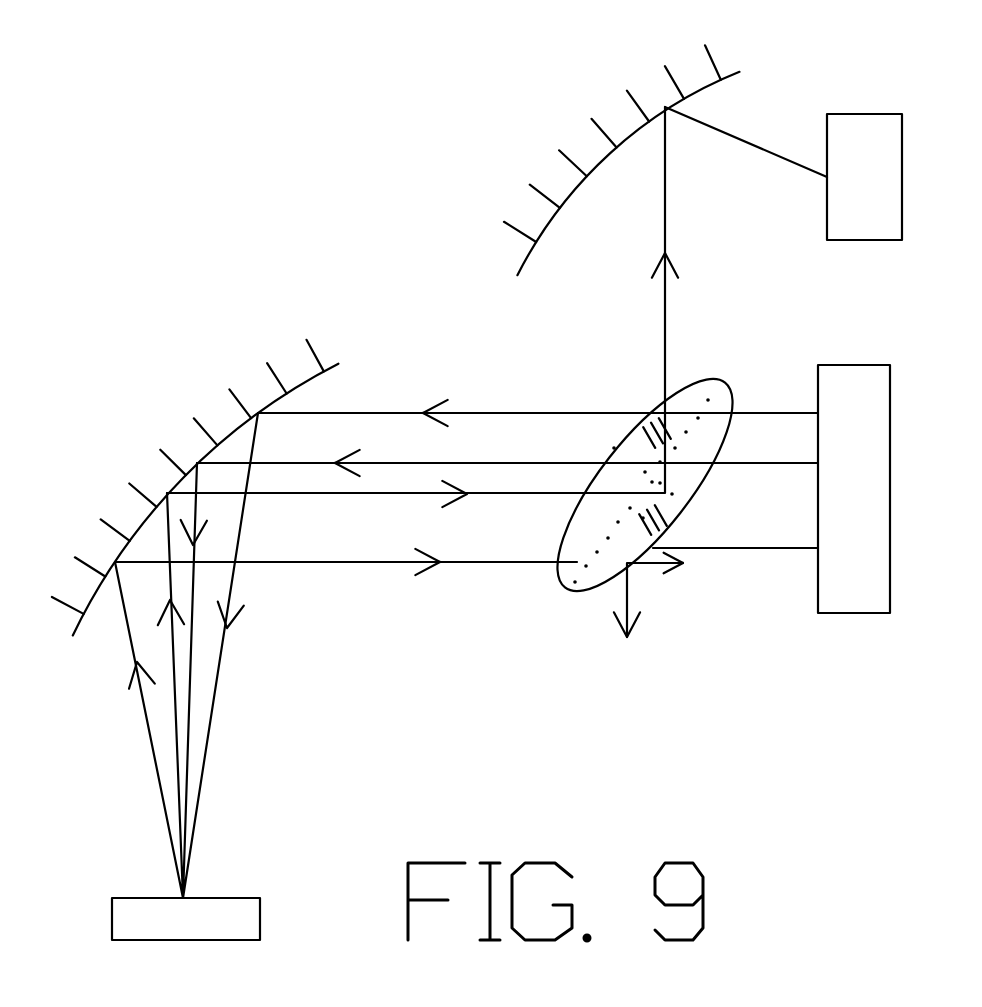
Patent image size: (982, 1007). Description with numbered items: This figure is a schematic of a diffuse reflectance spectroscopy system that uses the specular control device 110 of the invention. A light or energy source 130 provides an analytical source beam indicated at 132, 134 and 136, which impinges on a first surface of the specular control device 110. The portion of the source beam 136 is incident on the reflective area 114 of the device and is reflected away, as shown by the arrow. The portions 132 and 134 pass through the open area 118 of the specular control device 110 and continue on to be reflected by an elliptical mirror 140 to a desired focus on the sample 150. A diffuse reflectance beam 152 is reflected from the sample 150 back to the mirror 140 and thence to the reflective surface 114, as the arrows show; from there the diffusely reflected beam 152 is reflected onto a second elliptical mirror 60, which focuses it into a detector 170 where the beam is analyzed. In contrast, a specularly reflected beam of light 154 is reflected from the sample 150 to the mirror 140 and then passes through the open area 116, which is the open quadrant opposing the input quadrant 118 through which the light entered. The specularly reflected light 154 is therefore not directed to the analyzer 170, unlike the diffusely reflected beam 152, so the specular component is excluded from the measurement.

The elliptical mirror 60 is at (594, 87).
The specular control device 110 is at (729, 356).
The reflective area 114 is at (593, 577).
The open area 116 is at (587, 515).
The open area 118 is at (692, 482).
The light or energy source 130 is at (837, 648).
The source beam 132 is at (343, 412).
The source beam 134 is at (468, 462).
The source beam 136 is at (698, 550).
The elliptical mirror 140 is at (157, 394).
The sample 150 is at (243, 853).
The diffuse reflectance beam 152 is at (268, 495).
The specularly reflected beam 154 is at (258, 563).
The detector 170 is at (856, 83).